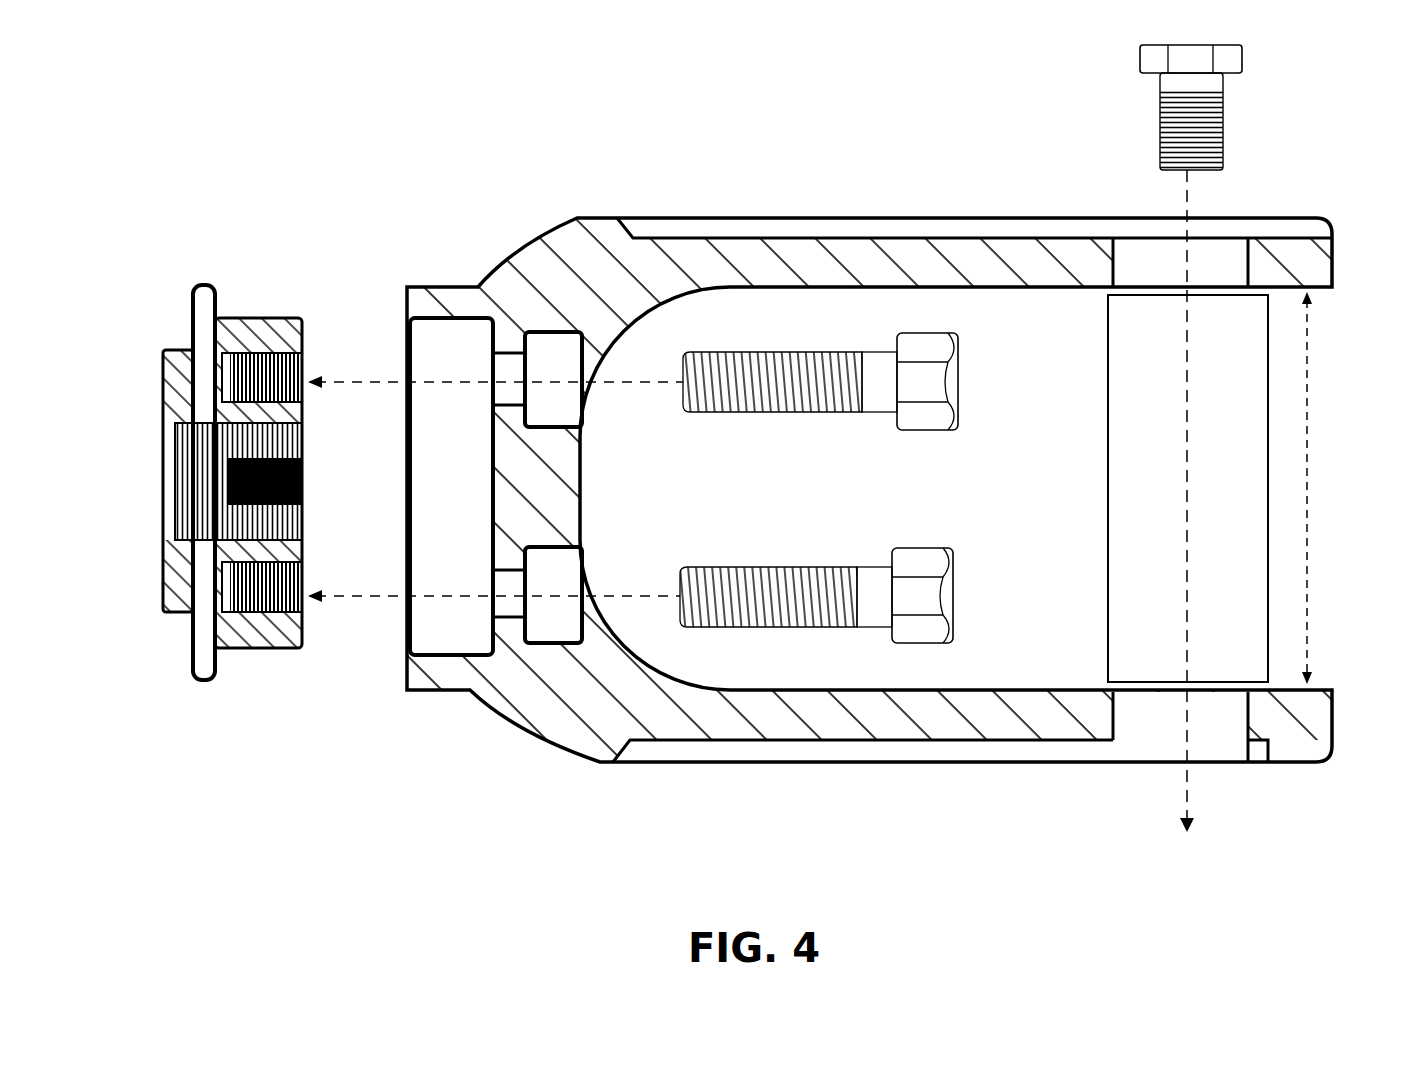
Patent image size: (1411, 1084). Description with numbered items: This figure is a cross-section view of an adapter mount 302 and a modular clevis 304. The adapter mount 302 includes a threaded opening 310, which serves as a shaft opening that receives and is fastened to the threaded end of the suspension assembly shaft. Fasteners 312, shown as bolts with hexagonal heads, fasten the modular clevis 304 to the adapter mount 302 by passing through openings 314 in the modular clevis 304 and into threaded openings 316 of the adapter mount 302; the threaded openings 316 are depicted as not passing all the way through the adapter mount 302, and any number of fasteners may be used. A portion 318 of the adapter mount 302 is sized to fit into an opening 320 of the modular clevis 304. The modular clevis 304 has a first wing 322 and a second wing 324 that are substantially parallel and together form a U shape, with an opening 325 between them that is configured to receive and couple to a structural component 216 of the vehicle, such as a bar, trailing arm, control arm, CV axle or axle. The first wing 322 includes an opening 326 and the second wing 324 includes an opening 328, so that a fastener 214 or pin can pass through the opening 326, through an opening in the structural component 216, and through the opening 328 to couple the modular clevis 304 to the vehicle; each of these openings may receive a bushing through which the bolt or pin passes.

The fastener 214 is at (1228, 60).
The structural component 216 is at (1240, 452).
The adapter mount 302 is at (286, 492).
The modular clevis 304 is at (859, 479).
The threaded opening 310 is at (180, 452).
The fasteners 312 is at (937, 413).
The openings 314 is at (573, 404).
The threaded openings 316 is at (308, 582).
The portion 318 is at (247, 652).
The opening 320 is at (430, 612).
The first wing 322 is at (940, 255).
The second wing 324 is at (850, 728).
The opening 325 is at (1312, 622).
The opening 326 is at (1165, 265).
The opening 328 is at (1207, 722).